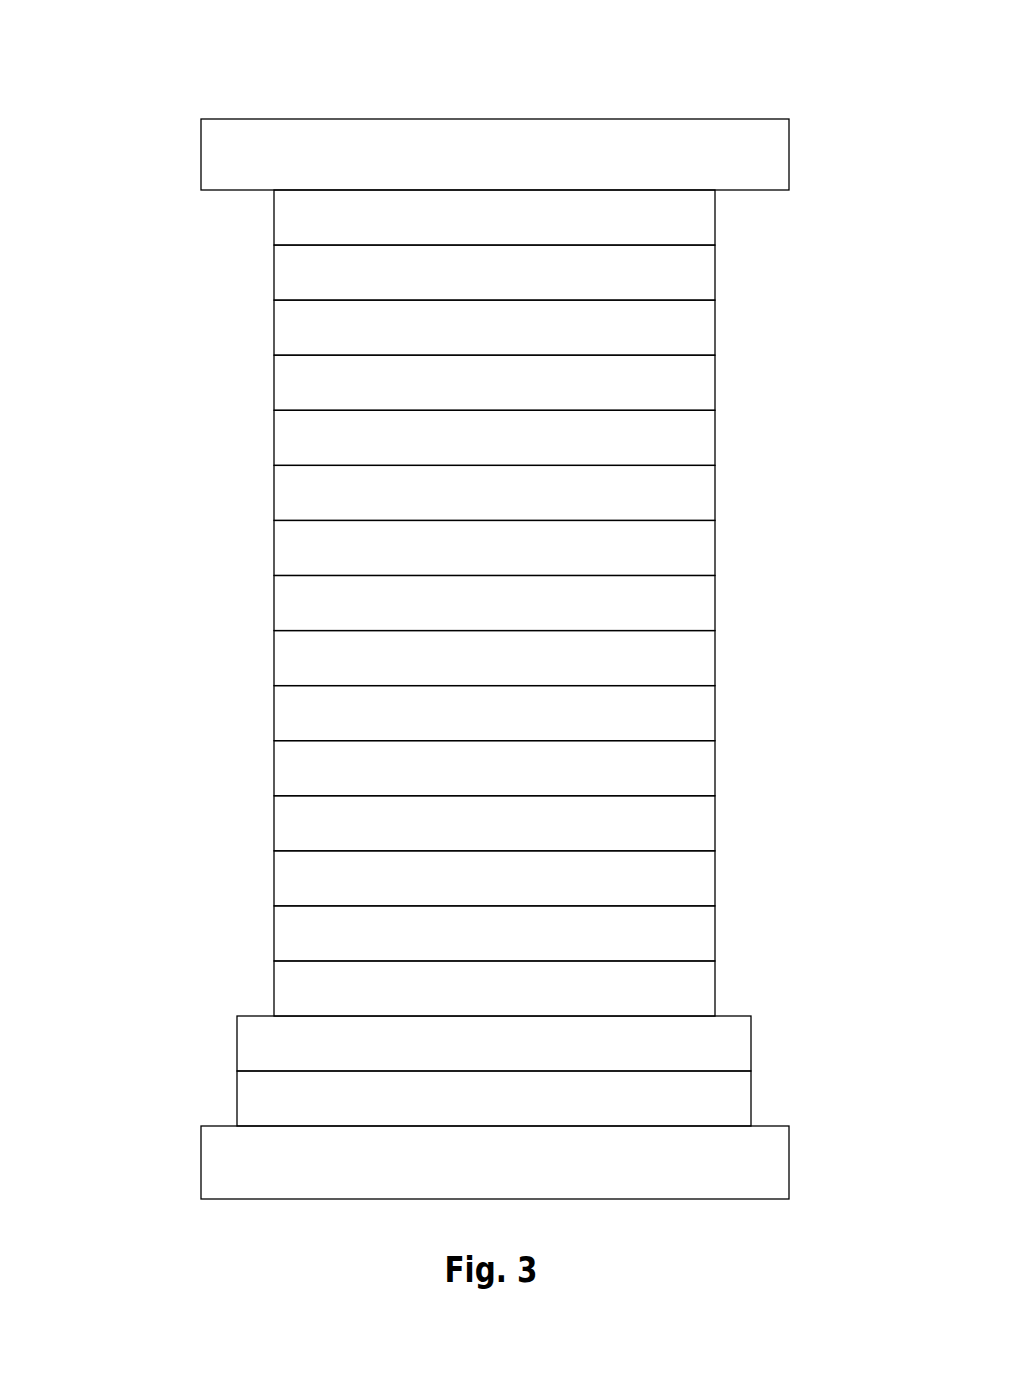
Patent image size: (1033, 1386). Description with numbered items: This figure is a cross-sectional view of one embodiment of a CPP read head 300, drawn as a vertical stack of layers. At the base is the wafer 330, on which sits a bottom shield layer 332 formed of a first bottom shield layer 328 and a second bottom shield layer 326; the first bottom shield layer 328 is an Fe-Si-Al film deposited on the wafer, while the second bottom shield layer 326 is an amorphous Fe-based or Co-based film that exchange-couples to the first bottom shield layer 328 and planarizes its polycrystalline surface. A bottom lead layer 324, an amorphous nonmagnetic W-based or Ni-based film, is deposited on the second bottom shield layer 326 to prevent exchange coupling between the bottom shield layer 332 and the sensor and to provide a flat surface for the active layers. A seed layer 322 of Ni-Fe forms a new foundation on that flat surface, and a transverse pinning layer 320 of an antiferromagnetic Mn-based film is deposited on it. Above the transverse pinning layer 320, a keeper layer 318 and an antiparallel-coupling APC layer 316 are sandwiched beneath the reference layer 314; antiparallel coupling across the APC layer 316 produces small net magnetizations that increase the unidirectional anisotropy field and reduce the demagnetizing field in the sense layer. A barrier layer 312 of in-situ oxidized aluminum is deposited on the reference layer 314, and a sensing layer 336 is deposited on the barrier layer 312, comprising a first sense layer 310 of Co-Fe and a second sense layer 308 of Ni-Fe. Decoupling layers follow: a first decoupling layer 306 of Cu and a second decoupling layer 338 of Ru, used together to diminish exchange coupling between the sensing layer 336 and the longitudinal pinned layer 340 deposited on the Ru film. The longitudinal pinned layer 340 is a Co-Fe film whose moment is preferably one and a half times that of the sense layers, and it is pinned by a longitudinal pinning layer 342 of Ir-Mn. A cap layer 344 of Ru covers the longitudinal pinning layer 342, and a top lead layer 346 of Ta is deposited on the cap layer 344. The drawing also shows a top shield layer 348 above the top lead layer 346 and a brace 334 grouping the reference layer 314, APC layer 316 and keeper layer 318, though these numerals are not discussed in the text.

The CPP read head 300 is at (82, 33).
The top shield layer 348 is at (789, 155).
The top lead layer 346 is at (715, 218).
The cap layer 344 is at (715, 274).
The longitudinal pinning layer 342 is at (715, 329).
The longitudinal pinned layer 340 is at (715, 384).
The second decoupling layer 338 is at (715, 439).
The first decoupling layer 306 is at (715, 494).
The second sense layer 308 is at (715, 549).
The first sense layer 310 is at (715, 604).
The barrier layer 312 is at (715, 659).
The reference layer 314 is at (715, 714).
The antiparallel-coupling (APC) layer 316 is at (715, 769).
The keeper layer 318 is at (715, 824).
The transverse pinning layer 320 is at (715, 879).
The seed layer 322 is at (715, 934).
The bottom lead layer 324 is at (715, 990).
The second bottom shield layer 326 is at (751, 1044).
The first bottom shield layer 328 is at (751, 1100).
The wafer 330 is at (789, 1164).
The bottom shield layer 332 is at (230, 1027).
The pinned layer structure 334 is at (257, 687).
The sensing layer 336 is at (257, 523).